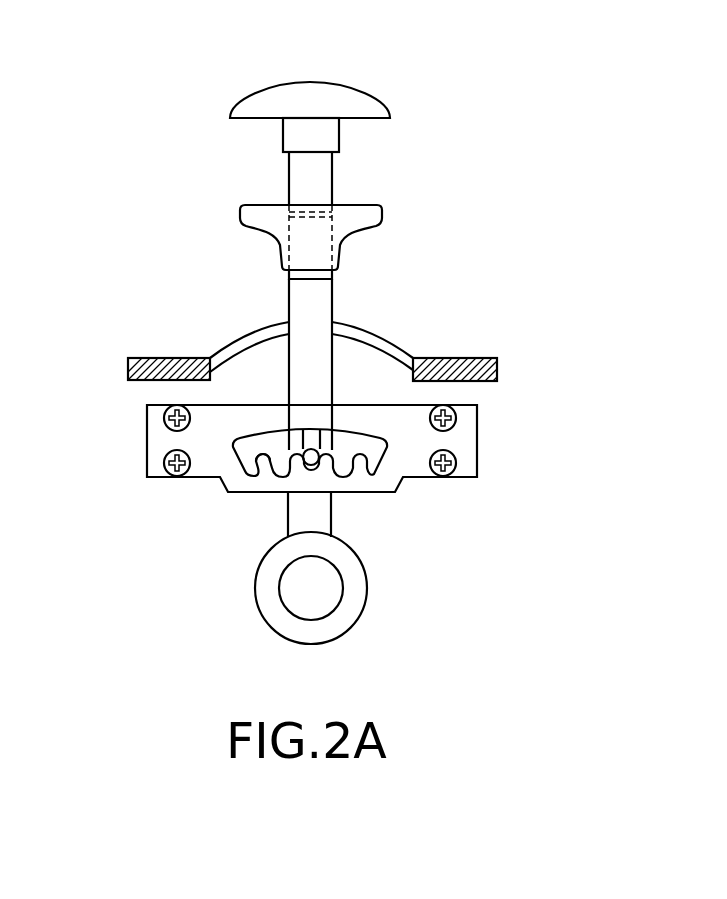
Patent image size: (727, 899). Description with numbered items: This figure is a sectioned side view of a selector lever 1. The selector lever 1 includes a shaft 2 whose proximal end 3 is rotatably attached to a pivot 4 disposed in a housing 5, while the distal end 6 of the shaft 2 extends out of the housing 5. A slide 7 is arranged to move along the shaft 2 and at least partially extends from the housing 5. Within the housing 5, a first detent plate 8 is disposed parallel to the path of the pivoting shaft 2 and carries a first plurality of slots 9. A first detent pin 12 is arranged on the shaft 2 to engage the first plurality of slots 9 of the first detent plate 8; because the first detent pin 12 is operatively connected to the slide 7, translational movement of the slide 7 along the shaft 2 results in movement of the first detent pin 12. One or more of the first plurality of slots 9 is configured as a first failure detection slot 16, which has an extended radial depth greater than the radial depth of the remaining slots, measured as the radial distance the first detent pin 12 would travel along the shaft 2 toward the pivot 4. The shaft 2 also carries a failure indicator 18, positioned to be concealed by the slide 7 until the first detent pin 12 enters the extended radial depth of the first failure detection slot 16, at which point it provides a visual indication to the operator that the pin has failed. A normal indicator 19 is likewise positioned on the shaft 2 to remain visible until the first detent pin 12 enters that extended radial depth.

The selector lever 1 is at (143, 152).
The shaft 2 is at (325, 310).
The proximal end 3 is at (333, 532).
The pivot 4 is at (307, 597).
The housing 5 is at (482, 358).
The distal end 6 is at (362, 86).
The slide 7 is at (240, 224).
The first detent plate 8 is at (467, 440).
The first plurality of slots 9 is at (247, 470).
The first detent pin 12 is at (308, 452).
The first failure detection slot 16 is at (282, 480).
The failure indicator 18 is at (332, 215).
The normal indicator 19 is at (328, 277).